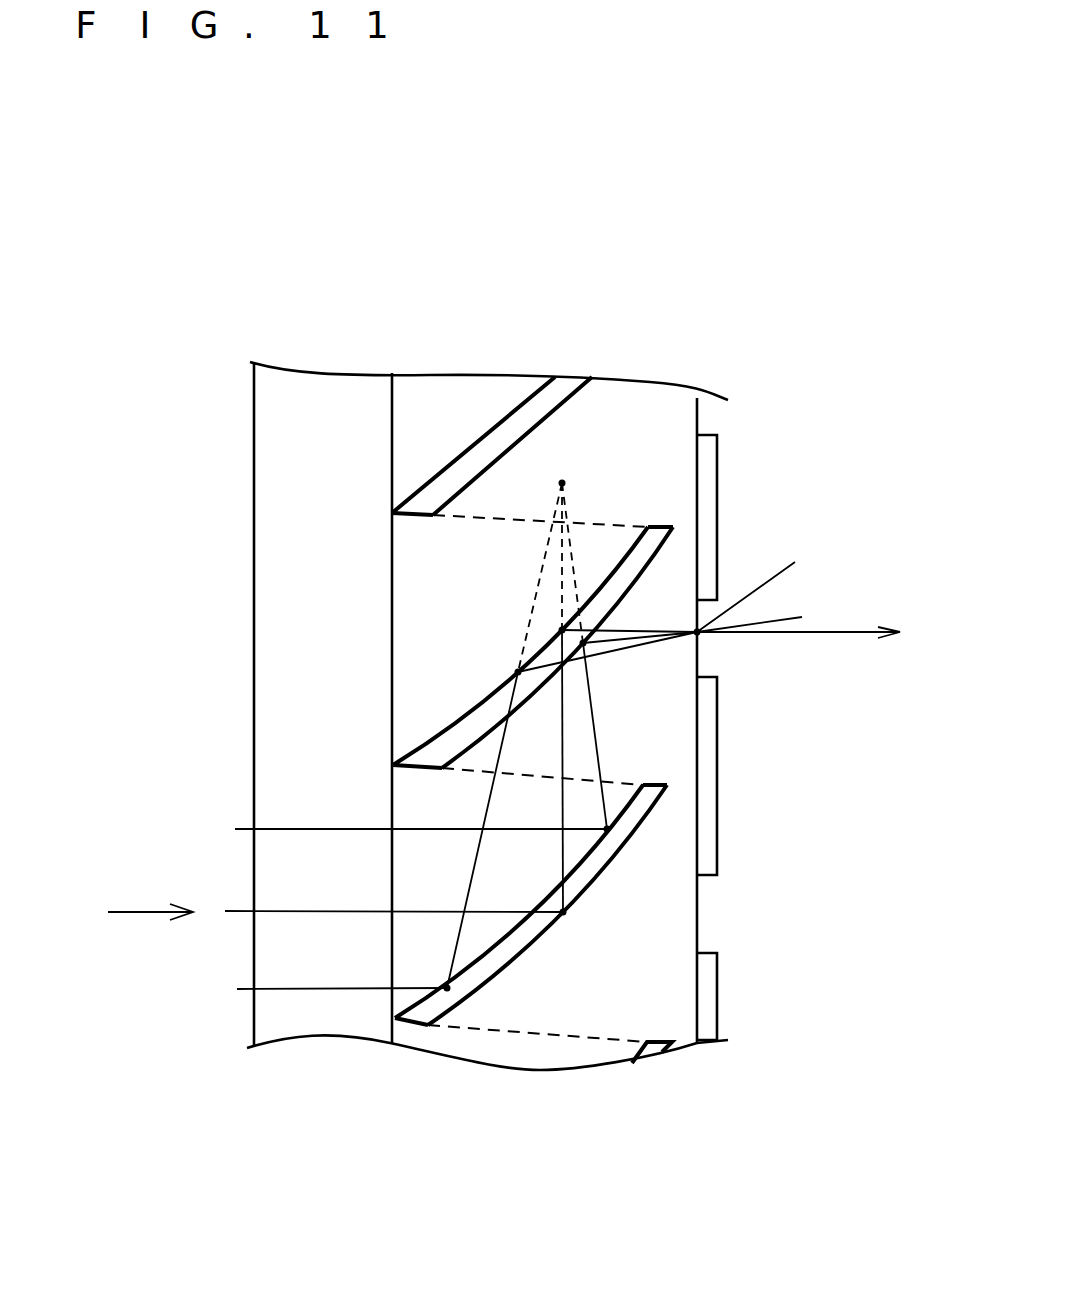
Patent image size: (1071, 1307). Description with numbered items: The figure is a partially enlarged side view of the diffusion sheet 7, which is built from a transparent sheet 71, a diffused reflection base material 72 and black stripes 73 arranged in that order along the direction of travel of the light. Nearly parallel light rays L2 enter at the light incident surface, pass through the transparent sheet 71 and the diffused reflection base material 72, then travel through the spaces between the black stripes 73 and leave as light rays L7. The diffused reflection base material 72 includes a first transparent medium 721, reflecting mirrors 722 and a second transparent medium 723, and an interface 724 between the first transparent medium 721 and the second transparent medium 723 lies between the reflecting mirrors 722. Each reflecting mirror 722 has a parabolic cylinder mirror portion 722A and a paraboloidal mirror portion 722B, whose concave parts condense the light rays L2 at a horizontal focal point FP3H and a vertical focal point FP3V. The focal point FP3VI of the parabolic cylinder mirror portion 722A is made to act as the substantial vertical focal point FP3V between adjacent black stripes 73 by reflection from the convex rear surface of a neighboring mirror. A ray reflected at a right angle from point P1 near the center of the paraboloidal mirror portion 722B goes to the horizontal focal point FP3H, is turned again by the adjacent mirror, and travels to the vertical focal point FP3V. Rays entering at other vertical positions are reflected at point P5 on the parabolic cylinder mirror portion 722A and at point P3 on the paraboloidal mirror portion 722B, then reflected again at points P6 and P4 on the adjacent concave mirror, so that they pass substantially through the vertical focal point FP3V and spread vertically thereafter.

The diffusion sheet 7 is at (732, 185).
The transparent sheet 71 is at (290, 1027).
The diffused reflection base material 72 is at (698, 342).
The first transparent medium 721 is at (412, 978).
The reflecting mirrors 722 is at (510, 963).
The parabolic cylinder mirror portion 722A is at (543, 895).
The paraboloidal mirror portion 722B is at (515, 935).
The second transparent medium 723 is at (617, 1020).
The interface 724 is at (633, 1063).
The black stripes 73 is at (717, 997).
The light rays L2 is at (140, 910).
The light rays L7 is at (813, 632).
The point P1 is at (563, 912).
The point P3 is at (447, 988).
The point P4 is at (518, 672).
The point P5 is at (607, 829).
The point P6 is at (583, 643).
The horizontal focal point FP3H is at (562, 630).
The vertical focal point FP3V is at (699, 634).
The focal point FP3VI is at (562, 483).